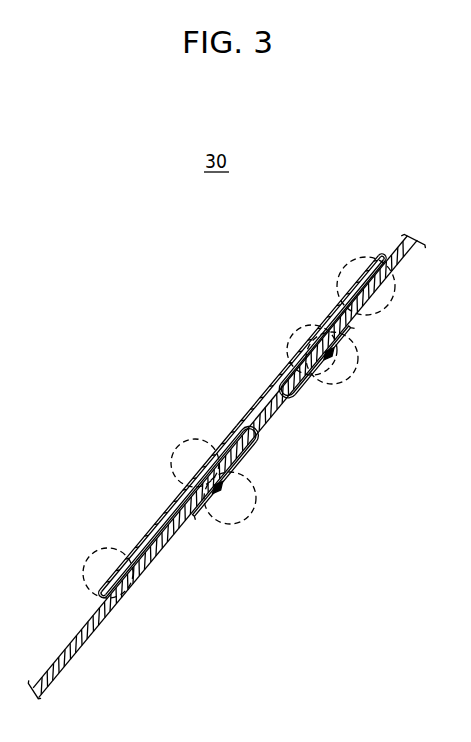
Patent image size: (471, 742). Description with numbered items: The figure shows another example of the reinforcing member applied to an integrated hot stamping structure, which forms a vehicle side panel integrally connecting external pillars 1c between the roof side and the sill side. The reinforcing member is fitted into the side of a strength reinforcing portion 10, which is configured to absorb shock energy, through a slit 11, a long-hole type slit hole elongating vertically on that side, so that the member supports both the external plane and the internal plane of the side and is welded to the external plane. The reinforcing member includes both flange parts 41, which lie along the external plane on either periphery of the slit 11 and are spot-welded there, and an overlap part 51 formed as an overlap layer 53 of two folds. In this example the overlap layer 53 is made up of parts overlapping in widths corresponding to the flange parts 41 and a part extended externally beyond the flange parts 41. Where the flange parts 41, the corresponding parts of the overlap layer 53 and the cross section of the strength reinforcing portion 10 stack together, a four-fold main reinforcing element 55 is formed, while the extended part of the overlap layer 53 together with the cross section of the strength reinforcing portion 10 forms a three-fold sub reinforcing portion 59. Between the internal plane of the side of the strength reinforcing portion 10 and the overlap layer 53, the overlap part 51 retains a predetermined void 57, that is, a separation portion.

The strength reinforcing portion 10 is at (80, 623).
The external pillar 1c is at (107, 618).
The slit 11 is at (255, 427).
The flange parts 41 is at (204, 519).
The overlap part 51 is at (85, 597).
The overlap layer 53 is at (152, 510).
The main reinforcing element 55 is at (185, 458).
The void 57 is at (236, 426).
The sub reinforcing portion 59 is at (110, 556).